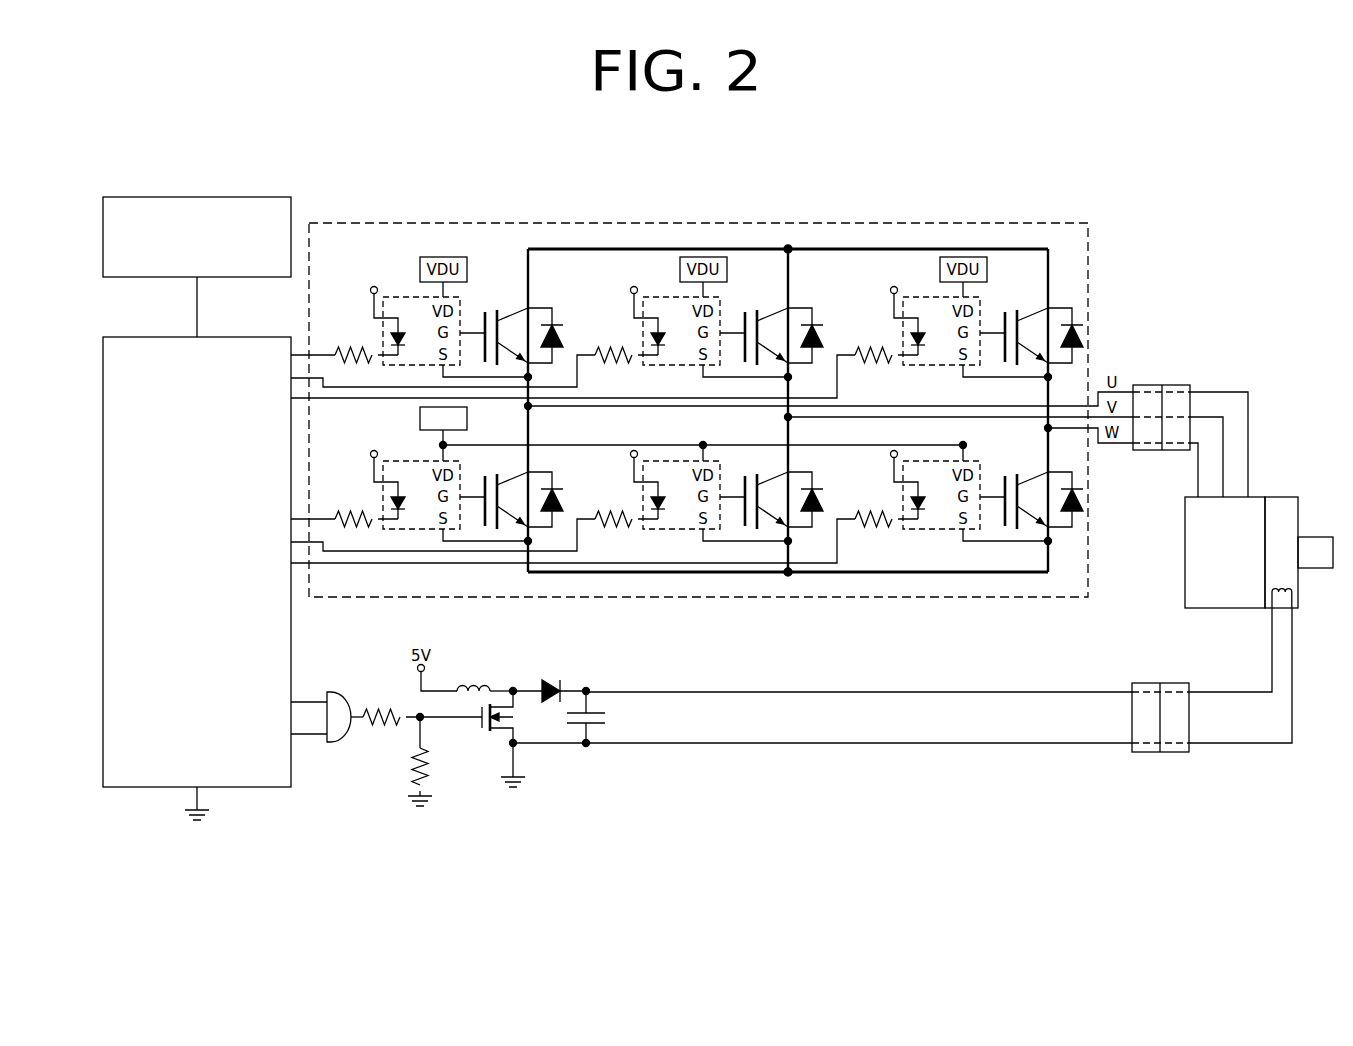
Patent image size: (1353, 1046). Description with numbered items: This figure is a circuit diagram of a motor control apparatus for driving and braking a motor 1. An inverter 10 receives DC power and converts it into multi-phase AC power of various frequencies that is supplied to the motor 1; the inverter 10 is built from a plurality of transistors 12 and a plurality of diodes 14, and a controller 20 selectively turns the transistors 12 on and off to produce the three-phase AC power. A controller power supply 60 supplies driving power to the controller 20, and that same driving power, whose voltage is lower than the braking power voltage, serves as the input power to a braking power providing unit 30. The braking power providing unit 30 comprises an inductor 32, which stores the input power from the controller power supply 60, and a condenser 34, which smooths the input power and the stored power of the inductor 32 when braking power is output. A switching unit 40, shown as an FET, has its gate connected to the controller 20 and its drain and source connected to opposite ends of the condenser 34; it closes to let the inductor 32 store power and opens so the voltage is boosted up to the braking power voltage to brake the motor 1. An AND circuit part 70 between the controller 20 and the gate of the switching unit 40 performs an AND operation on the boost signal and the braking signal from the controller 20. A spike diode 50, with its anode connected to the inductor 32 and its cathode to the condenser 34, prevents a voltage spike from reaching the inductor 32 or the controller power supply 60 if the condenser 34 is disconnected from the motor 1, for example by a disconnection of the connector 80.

The motor 1 is at (1278, 497).
The inverter 10 is at (721, 371).
The transistor 12 is at (500, 318).
The diode 14 is at (563, 328).
The controller 20 is at (137, 790).
The braking power providing unit 30 is at (531, 675).
The inductor 32 is at (490, 686).
The condenser 34 is at (578, 713).
The switching unit 40 is at (492, 731).
The spike diode 50 is at (547, 702).
The controller power supply 60 is at (225, 197).
The AND circuit part 70 is at (338, 742).
The connector 80 is at (1157, 752).